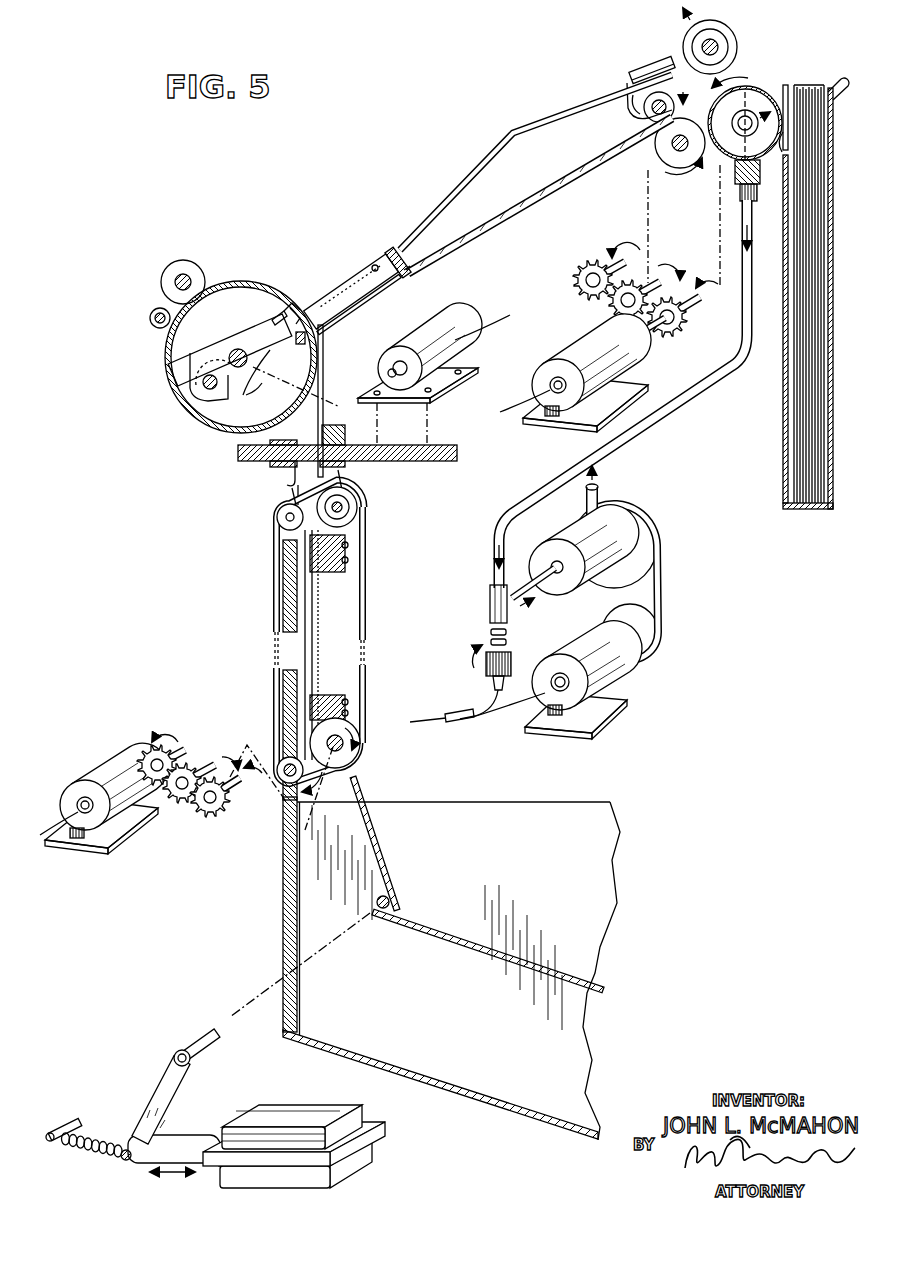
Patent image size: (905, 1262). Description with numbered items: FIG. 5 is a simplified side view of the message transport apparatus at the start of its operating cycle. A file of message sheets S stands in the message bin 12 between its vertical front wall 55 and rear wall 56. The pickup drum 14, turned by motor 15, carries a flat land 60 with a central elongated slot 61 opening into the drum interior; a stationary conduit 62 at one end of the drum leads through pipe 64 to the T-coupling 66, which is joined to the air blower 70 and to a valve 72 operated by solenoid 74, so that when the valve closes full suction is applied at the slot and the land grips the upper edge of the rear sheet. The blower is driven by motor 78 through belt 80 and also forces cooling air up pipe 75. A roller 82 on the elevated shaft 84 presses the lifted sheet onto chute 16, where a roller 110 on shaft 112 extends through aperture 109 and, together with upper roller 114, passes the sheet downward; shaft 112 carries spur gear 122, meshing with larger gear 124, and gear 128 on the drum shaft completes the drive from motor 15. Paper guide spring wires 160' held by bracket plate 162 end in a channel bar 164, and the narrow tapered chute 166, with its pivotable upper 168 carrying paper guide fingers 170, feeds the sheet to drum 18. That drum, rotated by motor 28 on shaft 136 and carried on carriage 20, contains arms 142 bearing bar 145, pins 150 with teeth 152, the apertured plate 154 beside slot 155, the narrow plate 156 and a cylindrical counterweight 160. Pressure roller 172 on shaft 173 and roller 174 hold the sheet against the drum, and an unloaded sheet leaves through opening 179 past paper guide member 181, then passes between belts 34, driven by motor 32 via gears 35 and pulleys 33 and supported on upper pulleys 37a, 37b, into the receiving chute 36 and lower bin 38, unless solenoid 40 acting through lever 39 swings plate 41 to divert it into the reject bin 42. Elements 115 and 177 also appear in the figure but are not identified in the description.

The message bin 12 is at (797, 513).
The pickup drum 14 is at (738, 85).
The motor 15 is at (580, 348).
The chute 16 is at (546, 193).
The drum 18 is at (171, 394).
The carriage 20 is at (438, 462).
The motor 28 is at (440, 332).
The motor 32 is at (122, 762).
The pulleys 33 is at (360, 752).
The belts 34 is at (310, 645).
The gears 35 is at (183, 803).
The message sheet receiving chute 36 is at (616, 835).
The upper pulley 37a is at (278, 512).
The upper pulley 37b is at (352, 508).
The lower compartment or bin 38 is at (495, 1115).
The lever 39 is at (163, 1085).
The solenoid 40 is at (282, 1120).
The vane or plate 41 is at (378, 840).
The upper reject message compartment or bin 42 is at (601, 990).
The front wall 55 is at (834, 322).
The rear wall 56 is at (784, 416).
The message sheets S is at (800, 448).
The land 60 is at (784, 136).
The elongated slot or hole 61 is at (760, 180).
The stationary conduit 62 is at (752, 113).
The pipe 64 is at (623, 439).
The T-coupling 66 is at (489, 608).
The air blower 70 is at (592, 585).
The valve 72 is at (507, 640).
The solenoid 74 is at (512, 662).
The pipe 75 is at (600, 494).
The motor 78 is at (622, 688).
The belt 80 is at (660, 584).
The roller 82 is at (690, 50).
The shaft 84 is at (716, 44).
The aperture 109 is at (648, 130).
The roller 110 is at (678, 165).
The shaft 112 is at (673, 147).
The upper roller 114 is at (628, 92).
The guide belt 115 is at (615, 105).
The spur gear 122 is at (580, 268).
The gear 124 is at (642, 282).
The gear 128 is at (688, 328).
The shaft 136 is at (232, 350).
The arms 142 is at (178, 372).
The bar 145 is at (258, 388).
The pins 150 is at (272, 314).
The teeth 152 is at (285, 306).
The apertured plate 154 is at (292, 308).
The elongated slot 155 is at (306, 340).
The narrow plate 156 is at (306, 368).
The cylindrical counterweight 160 is at (192, 397).
The paper guide spring wires 160' is at (518, 109).
The bracket plate 162 is at (412, 270).
The channel bar 164 is at (648, 78).
The narrow tapered chute 166 is at (362, 292).
The pivotable upper 168 is at (397, 247).
The paper guide fingers 170 is at (356, 276).
The pressure roller 172 is at (176, 262).
The shaft 173 is at (186, 276).
The roller 174 is at (153, 311).
The small roller shaft 177 is at (154, 319).
The opening 179 is at (290, 476).
The paper guide member 181 is at (270, 378).